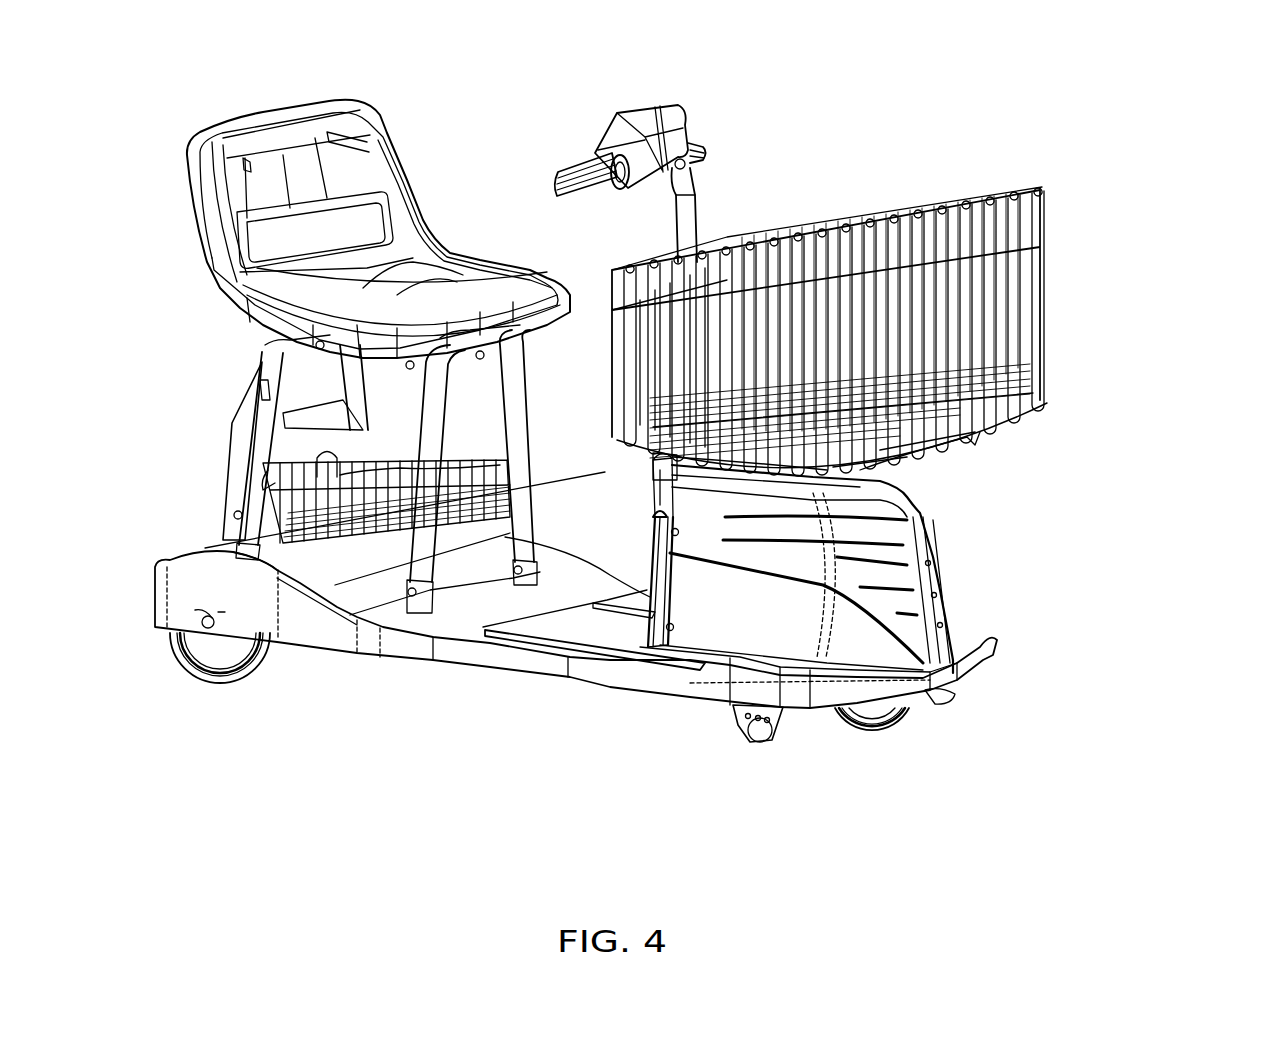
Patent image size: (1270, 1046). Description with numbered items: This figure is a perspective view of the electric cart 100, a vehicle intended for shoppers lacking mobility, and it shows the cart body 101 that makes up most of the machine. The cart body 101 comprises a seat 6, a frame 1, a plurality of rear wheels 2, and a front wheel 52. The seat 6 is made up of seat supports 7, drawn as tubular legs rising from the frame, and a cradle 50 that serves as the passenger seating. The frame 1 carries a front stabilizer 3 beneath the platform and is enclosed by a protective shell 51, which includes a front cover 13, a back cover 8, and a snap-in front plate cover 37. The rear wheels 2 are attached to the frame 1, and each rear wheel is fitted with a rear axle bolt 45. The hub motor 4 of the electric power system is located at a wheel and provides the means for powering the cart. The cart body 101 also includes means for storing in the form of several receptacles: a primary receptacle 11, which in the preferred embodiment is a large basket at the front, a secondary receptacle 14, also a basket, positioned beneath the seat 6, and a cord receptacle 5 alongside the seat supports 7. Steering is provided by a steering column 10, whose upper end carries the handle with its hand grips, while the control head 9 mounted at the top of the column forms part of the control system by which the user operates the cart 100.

The electric cart 100 is at (1135, 130).
The frame 1 is at (506, 683).
The rear wheels 2 is at (200, 687).
The front stabilizer 3 is at (778, 740).
The hub motor 4 is at (875, 735).
The cord receptacle 5 is at (230, 445).
The seat 6 is at (192, 272).
The seat supports 7 is at (528, 400).
The back cover 8 is at (650, 523).
The control head 9 is at (672, 107).
The steering column 10 is at (698, 206).
The primary receptacle 11 is at (1052, 190).
The front cover 13 is at (946, 600).
The secondary receptacle 14 is at (317, 558).
The snap-in front plate cover 37 is at (928, 522).
The rear axle bolt 45 is at (160, 620).
The cradle 50 is at (354, 138).
The protective shell 51 is at (730, 660).
The front wheel 52 is at (845, 735).
The cart body 101 is at (997, 846).